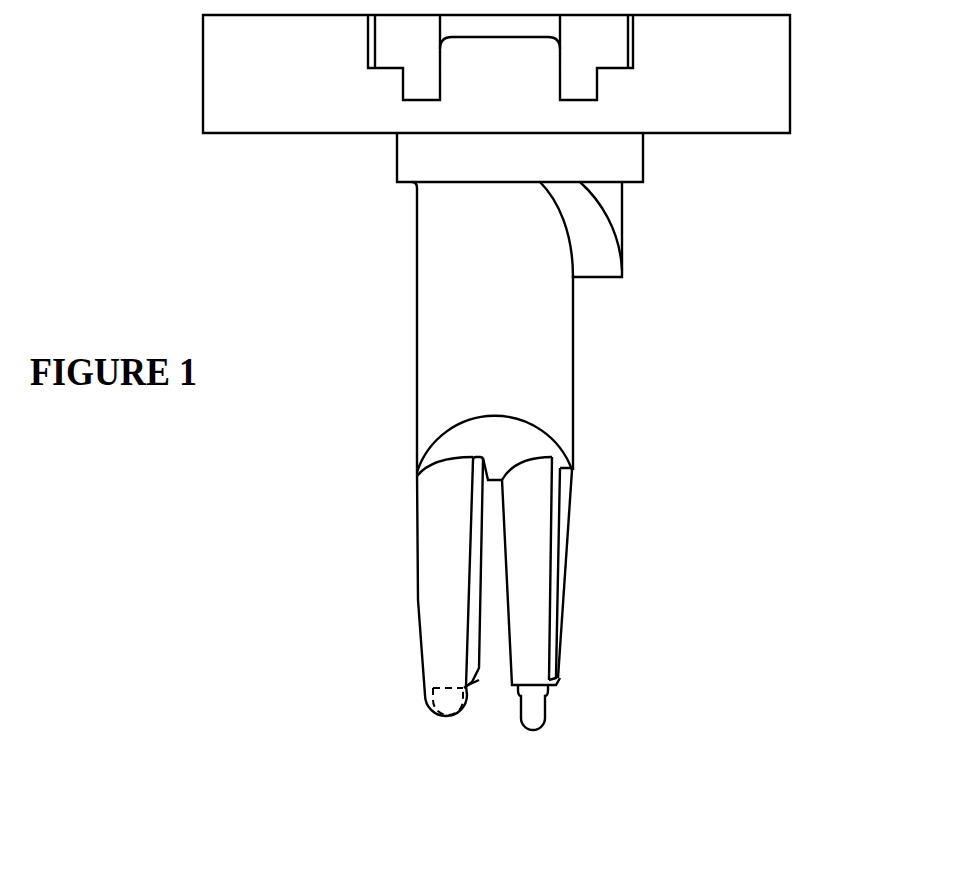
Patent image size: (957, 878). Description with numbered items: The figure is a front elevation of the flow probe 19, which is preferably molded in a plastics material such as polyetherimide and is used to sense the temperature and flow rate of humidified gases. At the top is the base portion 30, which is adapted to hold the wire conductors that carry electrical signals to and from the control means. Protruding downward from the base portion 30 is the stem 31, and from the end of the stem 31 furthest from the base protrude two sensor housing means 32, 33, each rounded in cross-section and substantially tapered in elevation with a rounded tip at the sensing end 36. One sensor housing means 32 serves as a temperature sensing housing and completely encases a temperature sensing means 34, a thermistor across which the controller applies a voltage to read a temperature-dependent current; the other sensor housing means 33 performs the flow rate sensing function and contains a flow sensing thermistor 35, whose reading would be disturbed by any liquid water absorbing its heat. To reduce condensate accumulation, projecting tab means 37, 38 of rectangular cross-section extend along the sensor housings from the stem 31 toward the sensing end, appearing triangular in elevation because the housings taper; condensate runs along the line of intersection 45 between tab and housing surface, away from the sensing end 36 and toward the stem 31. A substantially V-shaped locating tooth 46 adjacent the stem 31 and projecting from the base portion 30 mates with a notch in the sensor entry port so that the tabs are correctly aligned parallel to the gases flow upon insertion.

The flow probe 19 is at (286, 433).
The base portion 30 is at (792, 77).
The stem 31 is at (417, 330).
The locating tooth 46 is at (618, 203).
The sensor housing means 32 is at (417, 513).
The sensor housing means 33 is at (570, 502).
The temperature sensing means 34 is at (453, 723).
The flow sensing thermistor 35 is at (543, 723).
The sensing end 36 is at (433, 718).
The projecting tab means 37 is at (558, 643).
The projecting tab means 38 is at (482, 678).
The line of intersection 45 is at (541, 598).